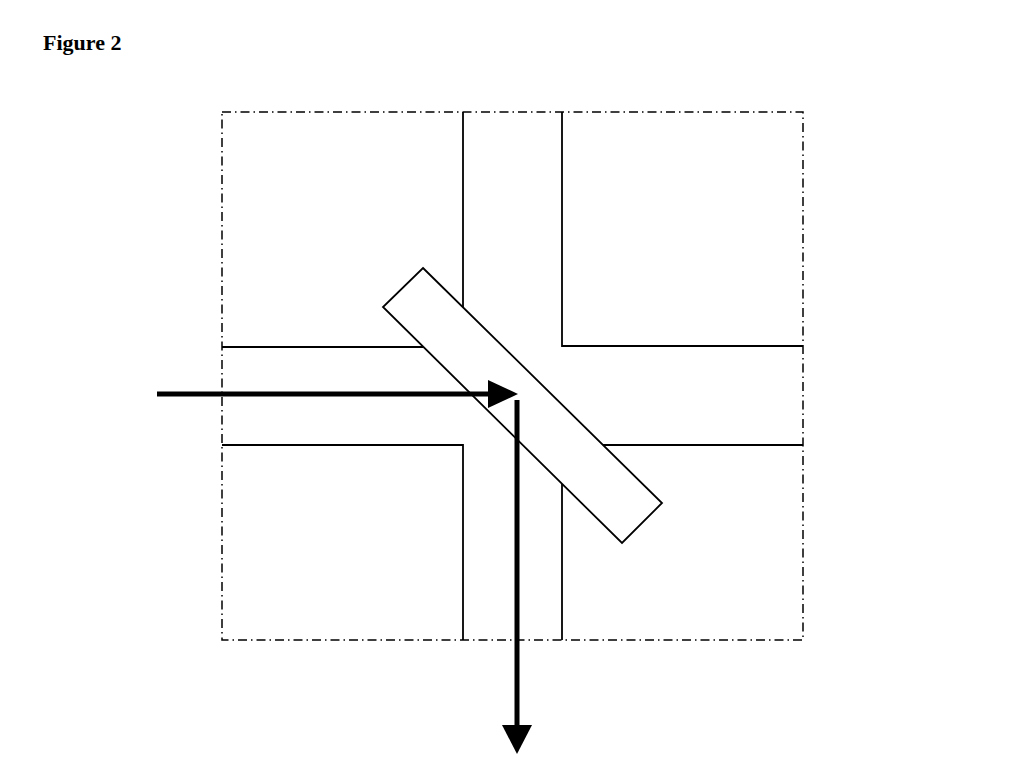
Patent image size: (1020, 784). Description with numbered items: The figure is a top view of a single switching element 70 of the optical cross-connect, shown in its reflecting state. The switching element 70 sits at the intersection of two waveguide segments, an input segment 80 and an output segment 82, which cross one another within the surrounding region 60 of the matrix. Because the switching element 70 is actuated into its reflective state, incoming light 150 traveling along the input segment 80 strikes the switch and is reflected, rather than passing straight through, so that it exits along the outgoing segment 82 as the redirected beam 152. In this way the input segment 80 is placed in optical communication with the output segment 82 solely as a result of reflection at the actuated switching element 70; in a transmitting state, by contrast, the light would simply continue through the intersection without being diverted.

The substrate / lightwave circuit region 60 is at (783, 150).
The switching element 70 is at (443, 310).
The input segment 80 is at (355, 422).
The output segment 82 is at (478, 598).
The incoming light 150 is at (182, 386).
The reflected output light beam 152 is at (497, 694).